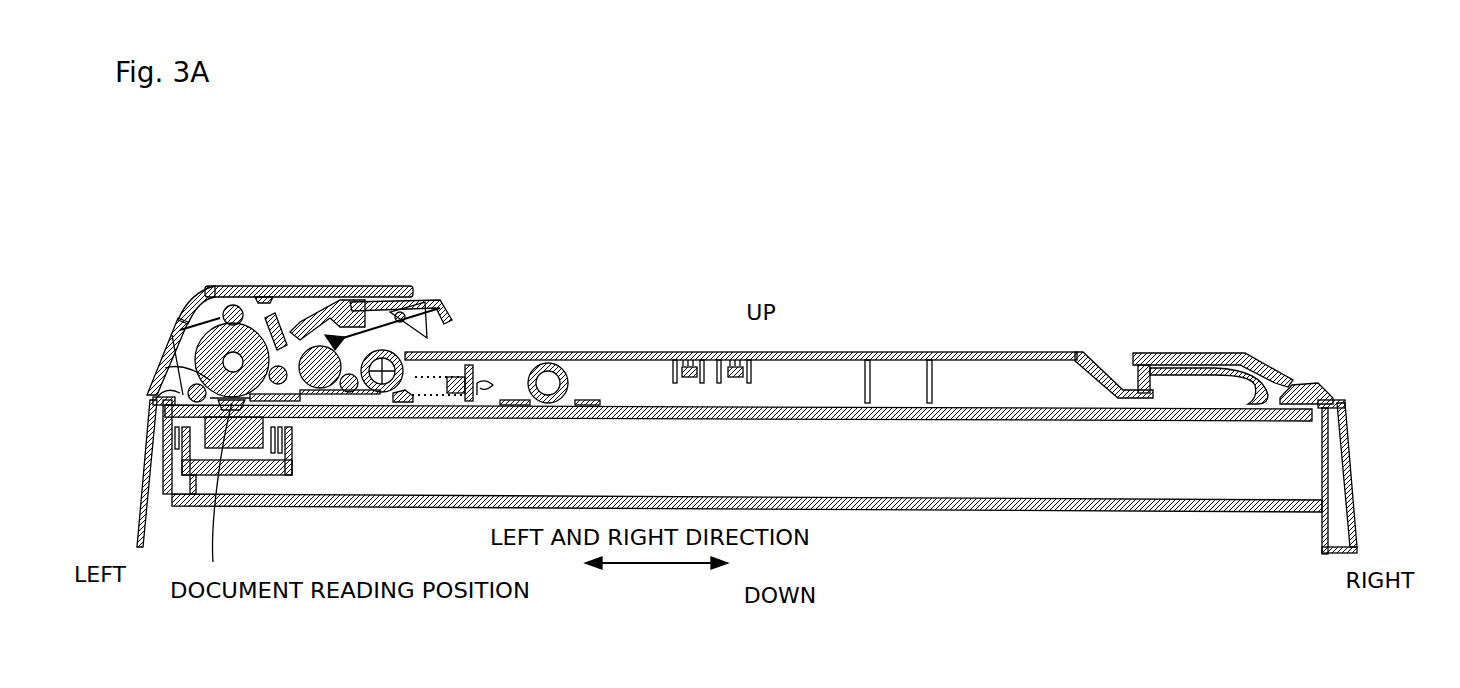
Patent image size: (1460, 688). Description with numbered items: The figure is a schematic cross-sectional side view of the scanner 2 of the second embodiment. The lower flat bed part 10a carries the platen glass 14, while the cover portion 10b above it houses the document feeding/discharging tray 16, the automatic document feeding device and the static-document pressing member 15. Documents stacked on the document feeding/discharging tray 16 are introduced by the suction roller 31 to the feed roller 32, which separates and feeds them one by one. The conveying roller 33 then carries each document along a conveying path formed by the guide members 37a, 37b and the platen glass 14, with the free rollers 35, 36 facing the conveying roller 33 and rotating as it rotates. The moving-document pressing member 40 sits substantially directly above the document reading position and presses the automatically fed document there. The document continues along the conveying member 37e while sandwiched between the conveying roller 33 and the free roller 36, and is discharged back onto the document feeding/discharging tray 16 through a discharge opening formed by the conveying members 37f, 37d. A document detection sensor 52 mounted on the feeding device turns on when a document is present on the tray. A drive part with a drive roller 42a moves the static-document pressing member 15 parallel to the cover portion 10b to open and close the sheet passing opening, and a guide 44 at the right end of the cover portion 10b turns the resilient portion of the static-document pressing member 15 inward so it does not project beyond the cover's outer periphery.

The scanner 2 is at (840, 297).
The flat bed part 10a is at (998, 511).
The cover portion 10b is at (1007, 351).
The platen glass 14 is at (213, 433).
The static-document pressing member 15 is at (797, 405).
The document feeding/discharging tray 16 is at (577, 350).
The suction roller 31 is at (393, 402).
The feed roller 32 is at (330, 388).
The conveying roller 33 is at (219, 358).
The free roller 35 is at (185, 390).
The free roller 36 is at (236, 305).
The guide member 37a is at (183, 303).
The guide member 37b is at (163, 367).
The conveying member 37d is at (357, 285).
The conveying member 37e is at (293, 333).
The conveying member 37f is at (447, 317).
The moving-document pressing member 40 is at (237, 403).
The drive roller 42a is at (552, 398).
The guide 44 is at (1295, 390).
The document detection sensor 52 is at (392, 303).